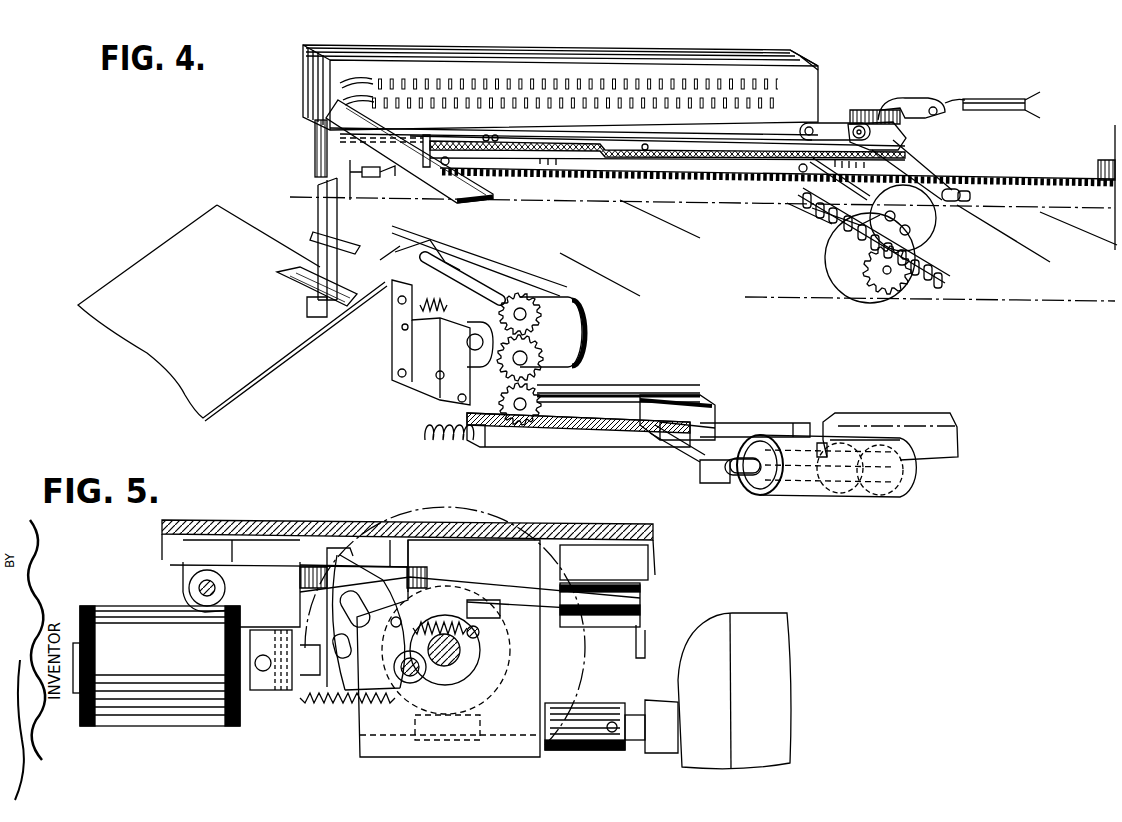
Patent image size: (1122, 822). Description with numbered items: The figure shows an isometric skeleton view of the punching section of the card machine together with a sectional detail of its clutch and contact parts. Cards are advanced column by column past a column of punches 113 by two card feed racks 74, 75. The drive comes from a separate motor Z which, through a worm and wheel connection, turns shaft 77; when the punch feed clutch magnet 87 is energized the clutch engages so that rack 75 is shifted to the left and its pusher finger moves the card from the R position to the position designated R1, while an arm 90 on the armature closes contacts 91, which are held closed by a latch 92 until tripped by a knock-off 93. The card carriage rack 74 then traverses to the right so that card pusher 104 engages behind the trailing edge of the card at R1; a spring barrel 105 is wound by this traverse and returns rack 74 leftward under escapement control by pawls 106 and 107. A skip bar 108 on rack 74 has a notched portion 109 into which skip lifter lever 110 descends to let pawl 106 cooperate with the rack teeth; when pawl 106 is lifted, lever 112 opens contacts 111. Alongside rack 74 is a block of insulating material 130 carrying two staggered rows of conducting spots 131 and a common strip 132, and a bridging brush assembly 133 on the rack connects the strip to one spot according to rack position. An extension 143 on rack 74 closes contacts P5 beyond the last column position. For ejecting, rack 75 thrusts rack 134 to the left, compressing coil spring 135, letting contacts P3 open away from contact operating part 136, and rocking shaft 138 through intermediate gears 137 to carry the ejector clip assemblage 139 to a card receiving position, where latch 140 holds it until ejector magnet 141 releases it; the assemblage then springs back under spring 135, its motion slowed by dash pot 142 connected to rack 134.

In FIG. 4, the block or strip of insulating material 130 is at (612, 54).
In FIG. 4, the spots of conducting material 131 is at (526, 98).
In FIG. 4, the common strip of conducting material 132 is at (702, 128).
In FIG. 4, the bridging or multiple brush assembly 133 is at (372, 92).
In FIG. 4, the escapement pawl 107 is at (822, 125).
In FIG. 4, the lever 112 is at (905, 98).
In FIG. 4, the contacts 111 is at (980, 99).
In FIG. 4, the escapement pawl 106 is at (905, 140).
In FIG. 4, the card feed rack 74 is at (1058, 176).
In FIG. 4, the skip lifter lever 110 is at (920, 165).
In FIG. 4, the notched portion 109 is at (512, 147).
In FIG. 4, the skip bar 108 is at (712, 164).
In FIG. 4, the spring barrel 105 is at (930, 226).
In FIG. 4, the card pusher 104 is at (925, 252).
In FIG. 4, the punches 113 is at (938, 285).
In FIG. 4, the R1 position R1 is at (805, 220).
In FIG. 4, the contacts P5 is at (318, 199).
In FIG. 4, the extension 143 is at (370, 178).
In FIG. 4, the ejector clip assemblage 139 is at (300, 283).
In FIG. 4, the latch 140 is at (392, 340).
In FIG. 4, the shaft 138 is at (480, 264).
In FIG. 4, the ejector magnet 141 is at (548, 294).
In FIG. 4, the intermediate gears 137 is at (540, 390).
In FIG. 4, the contacts P3 is at (652, 392).
In FIG. 4, the contact operating part 136 is at (700, 403).
In FIG. 4, the rack 134 is at (592, 440).
In FIG. 4, the coil spring 135 is at (447, 445).
In FIG. 4, the dash pot 142 is at (810, 465).
In FIG. 4, the card feed rack 75 is at (960, 443).
In FIG. 5, the arm 90 is at (305, 615).
In FIG. 5, the punch feed clutch magnet 87 is at (156, 666).
In FIG. 5, the shaft 77 is at (448, 648).
In FIG. 5, the latch 92 is at (395, 595).
In FIG. 5, the contacts 91 is at (487, 600).
In FIG. 5, the knock-off 93 is at (330, 722).
In FIG. 5, the motor Z is at (734, 691).